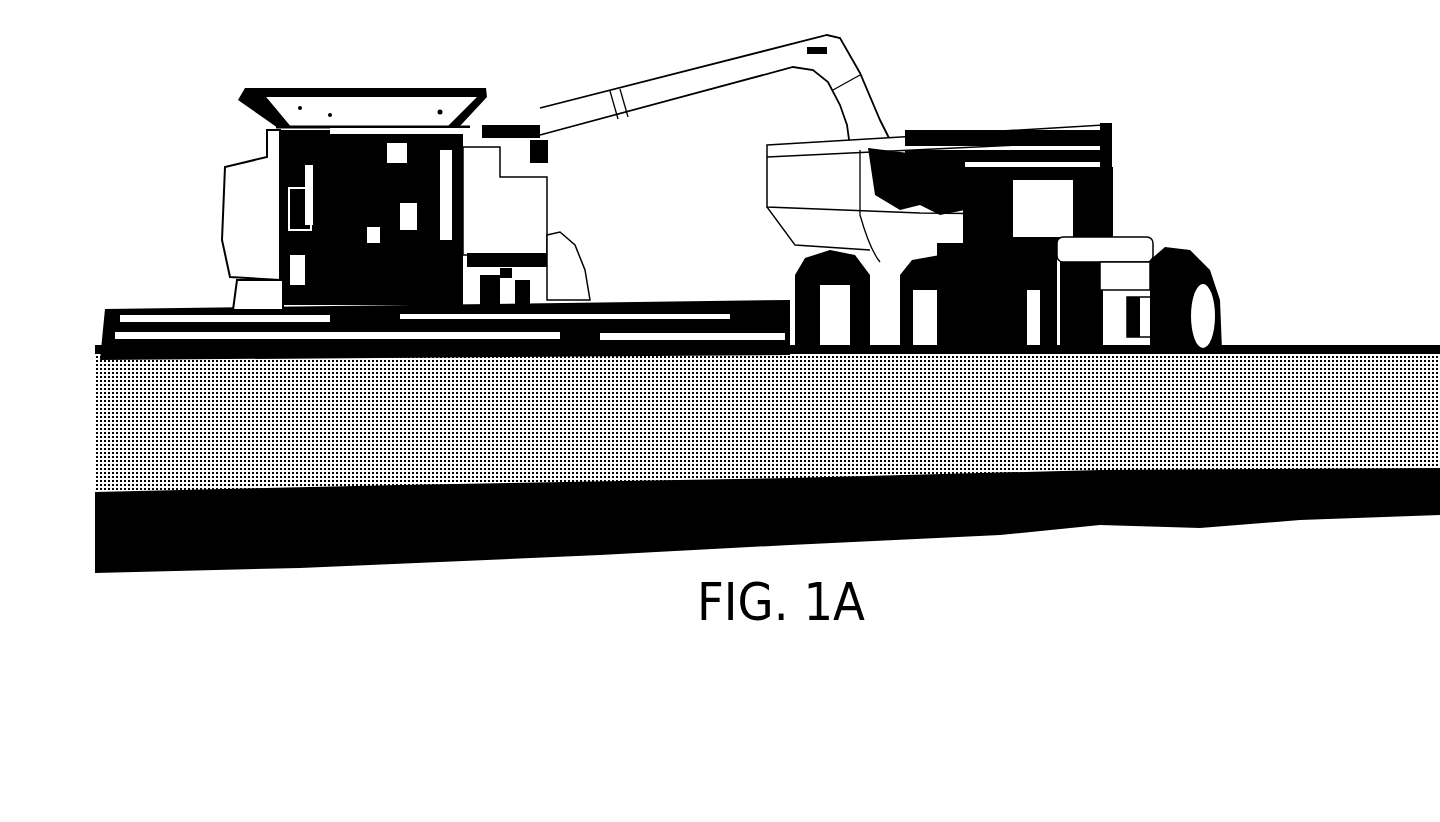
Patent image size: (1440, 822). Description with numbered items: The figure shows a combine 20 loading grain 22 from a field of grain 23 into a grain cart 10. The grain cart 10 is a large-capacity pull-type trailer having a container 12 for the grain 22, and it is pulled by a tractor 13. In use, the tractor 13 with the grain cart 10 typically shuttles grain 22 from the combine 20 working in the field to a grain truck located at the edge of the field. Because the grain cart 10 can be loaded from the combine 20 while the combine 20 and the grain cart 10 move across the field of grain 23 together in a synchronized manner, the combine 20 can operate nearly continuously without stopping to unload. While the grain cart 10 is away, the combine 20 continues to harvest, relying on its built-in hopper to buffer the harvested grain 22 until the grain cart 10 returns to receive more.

The grain cart 10 is at (994, 194).
The container 12 is at (963, 130).
The tractor 13 is at (1113, 235).
The combine 20 is at (325, 110).
The grain 22 is at (880, 97).
The field of grain 23 is at (1310, 347).